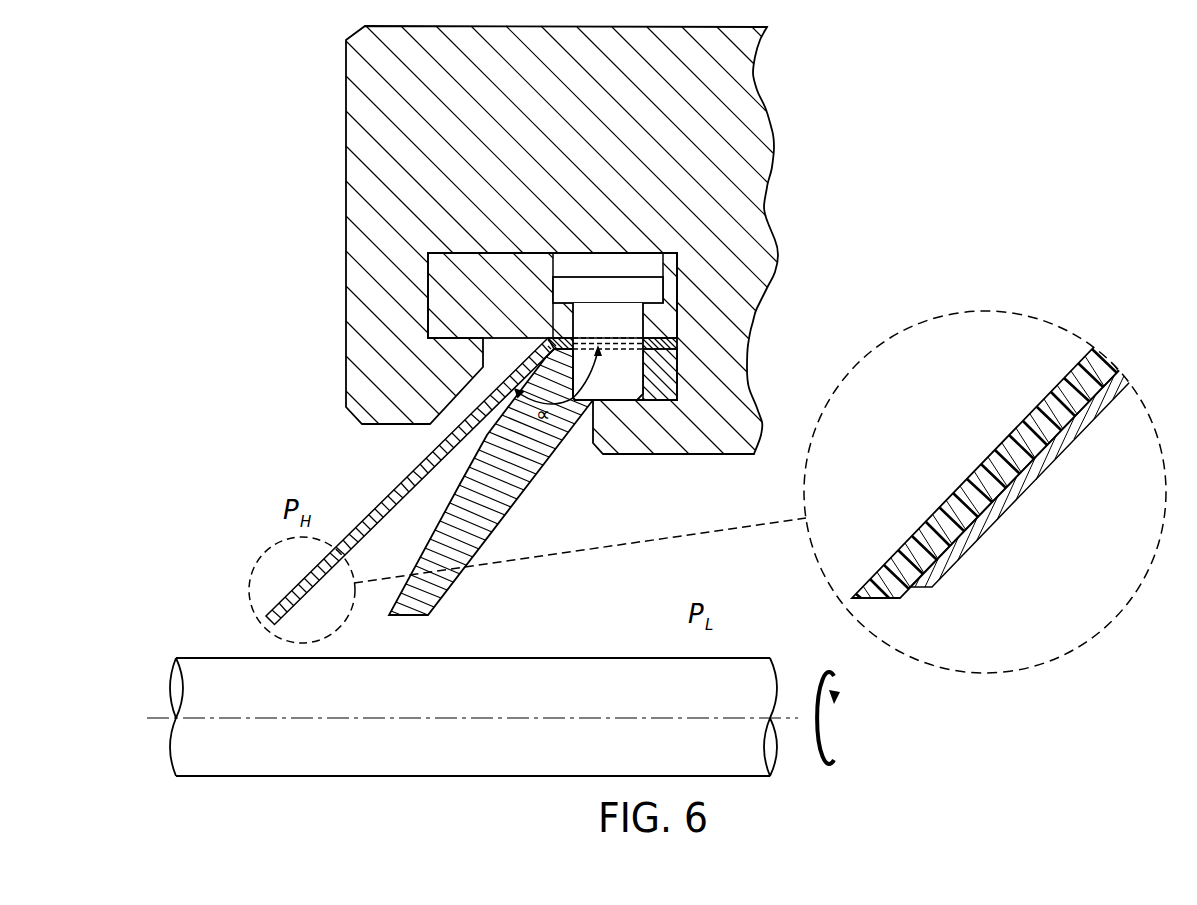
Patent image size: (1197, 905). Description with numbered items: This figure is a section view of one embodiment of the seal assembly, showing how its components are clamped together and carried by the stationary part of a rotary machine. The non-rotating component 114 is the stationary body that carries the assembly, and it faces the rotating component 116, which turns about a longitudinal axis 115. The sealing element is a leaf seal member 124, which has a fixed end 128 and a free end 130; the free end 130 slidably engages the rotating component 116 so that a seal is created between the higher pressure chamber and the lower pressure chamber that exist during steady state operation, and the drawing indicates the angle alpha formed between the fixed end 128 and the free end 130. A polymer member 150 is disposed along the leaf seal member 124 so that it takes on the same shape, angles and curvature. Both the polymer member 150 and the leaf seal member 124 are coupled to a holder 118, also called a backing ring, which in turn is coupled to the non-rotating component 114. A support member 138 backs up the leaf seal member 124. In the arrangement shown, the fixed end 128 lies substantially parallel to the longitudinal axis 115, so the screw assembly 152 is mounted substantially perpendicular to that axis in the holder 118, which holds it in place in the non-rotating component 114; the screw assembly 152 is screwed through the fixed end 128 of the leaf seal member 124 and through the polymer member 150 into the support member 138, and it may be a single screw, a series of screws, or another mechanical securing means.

The non-rotating component 114 is at (437, 121).
The longitudinal axis 115 is at (797, 718).
The rotating component 116 is at (490, 698).
The holder 118 is at (458, 300).
The leaf seal member 124 is at (995, 505).
The fixed end 128 is at (663, 340).
The free end 130 is at (268, 621).
The support member 138 is at (485, 513).
The polymer member 150 is at (1003, 467).
The screw assembly 152 is at (627, 285).